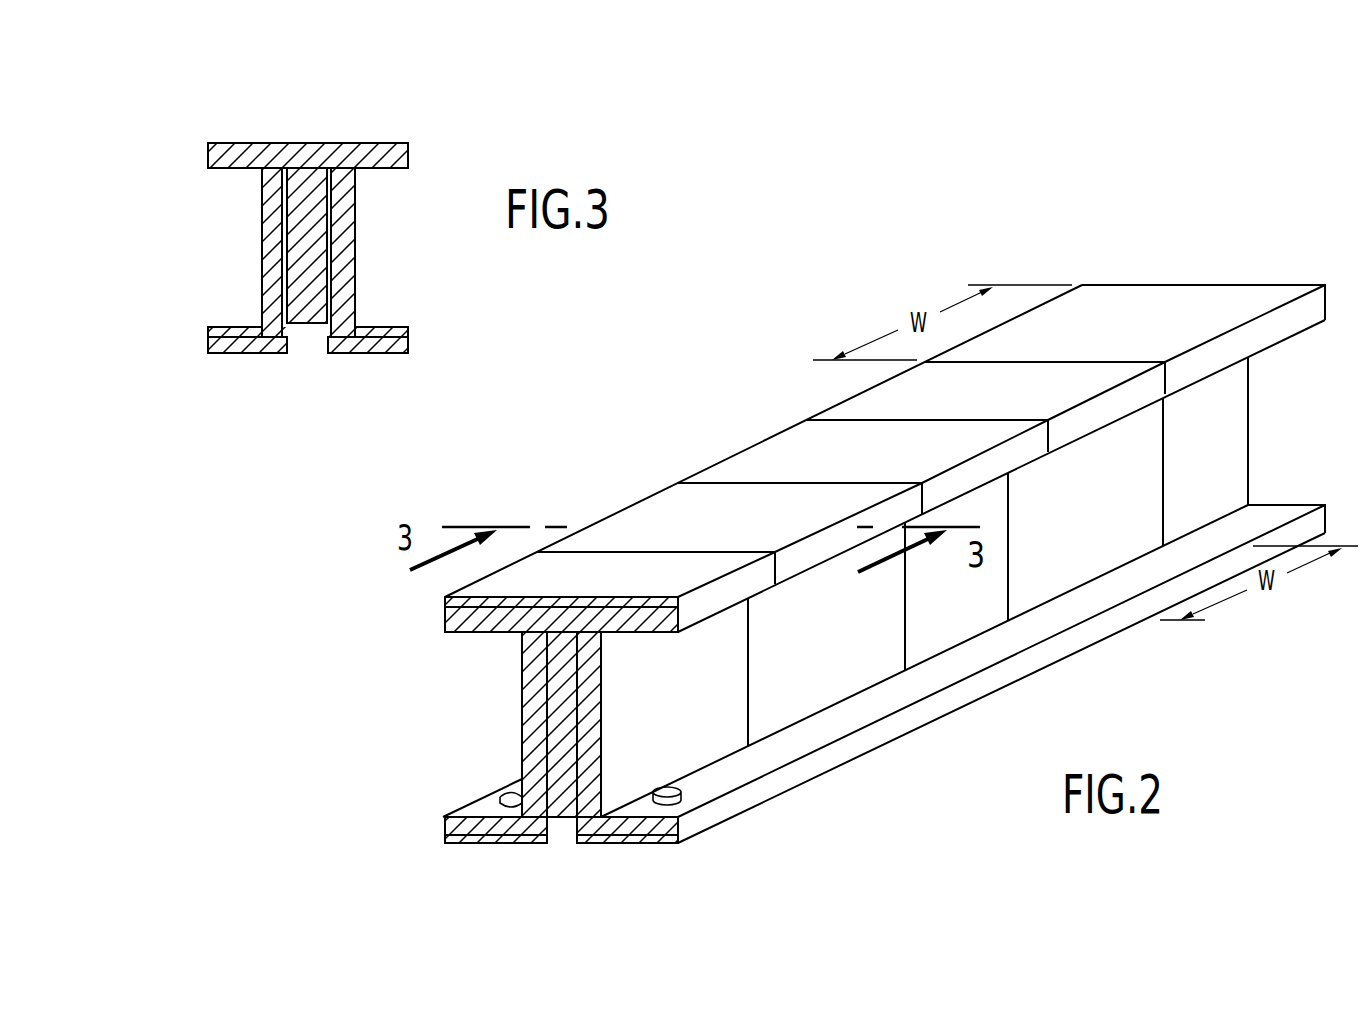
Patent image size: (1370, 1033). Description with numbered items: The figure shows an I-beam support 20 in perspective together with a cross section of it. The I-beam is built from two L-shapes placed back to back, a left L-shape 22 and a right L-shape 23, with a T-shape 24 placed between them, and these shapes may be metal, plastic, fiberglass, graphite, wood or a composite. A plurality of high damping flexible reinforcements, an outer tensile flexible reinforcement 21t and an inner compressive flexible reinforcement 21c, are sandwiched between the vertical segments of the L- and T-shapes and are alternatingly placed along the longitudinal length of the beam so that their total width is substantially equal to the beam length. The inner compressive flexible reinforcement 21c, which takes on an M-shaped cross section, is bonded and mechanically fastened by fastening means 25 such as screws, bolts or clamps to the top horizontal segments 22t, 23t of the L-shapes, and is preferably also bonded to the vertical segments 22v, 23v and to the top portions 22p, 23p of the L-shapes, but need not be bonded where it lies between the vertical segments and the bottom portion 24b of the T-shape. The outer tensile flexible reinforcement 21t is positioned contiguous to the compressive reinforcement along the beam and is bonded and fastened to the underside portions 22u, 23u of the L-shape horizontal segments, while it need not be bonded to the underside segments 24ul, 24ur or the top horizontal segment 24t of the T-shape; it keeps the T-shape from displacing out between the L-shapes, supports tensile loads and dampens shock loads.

In FIG. 2, the I-beam support 20 is at (632, 484).
In FIG. 2, the outer tensile flexible reinforcement 21t is at (487, 577).
In FIG. 2, the inner compressive flexible reinforcement 21c is at (890, 697).
In FIG. 3, the left L-shape 22 is at (222, 352).
In FIG. 2, the left L-shape 22 is at (490, 807).
In FIG. 3, the top portion of left L-shape 22p is at (278, 168).
In FIG. 3, the vertical segment of left L-shape 22v is at (262, 218).
In FIG. 2, the vertical segment of left L-shape 22v is at (534, 724).
In FIG. 3, the top horizontal segment of left L-shape 22t is at (218, 327).
In FIG. 2, the underside portion of left L-shape horizontal segment 22u is at (490, 845).
In FIG. 3, the right L-shape 23 is at (383, 353).
In FIG. 2, the right L-shape 23 is at (757, 758).
In FIG. 3, the top portion of right L-shape 23p is at (340, 168).
In FIG. 3, the vertical segment of right L-shape 23v is at (356, 240).
In FIG. 2, the vertical segment of right L-shape 23v is at (589, 724).
In FIG. 3, the top horizontal segment of right L-shape 23t is at (383, 320).
In FIG. 2, the underside portion of right L-shape horizontal segment 23u is at (610, 845).
In FIG. 3, the T-shape 24 is at (320, 150).
In FIG. 2, the T-shape 24 is at (460, 640).
In FIG. 2, the top horizontal segment of T-shape 24t is at (447, 600).
In FIG. 3, the bottom portion of T-shape 24b is at (303, 333).
In FIG. 2, the left underside segment of T-shape 24ul is at (510, 636).
In FIG. 2, the right underside segment of T-shape 24ur is at (617, 634).
In FIG. 2, the fastening means 25 is at (690, 797).